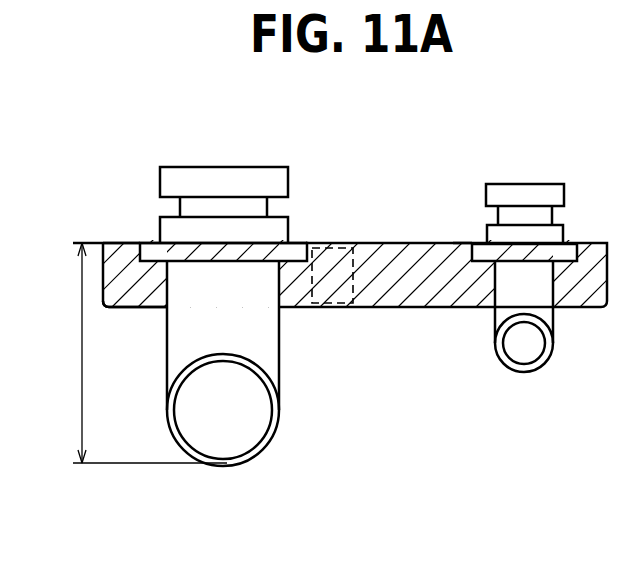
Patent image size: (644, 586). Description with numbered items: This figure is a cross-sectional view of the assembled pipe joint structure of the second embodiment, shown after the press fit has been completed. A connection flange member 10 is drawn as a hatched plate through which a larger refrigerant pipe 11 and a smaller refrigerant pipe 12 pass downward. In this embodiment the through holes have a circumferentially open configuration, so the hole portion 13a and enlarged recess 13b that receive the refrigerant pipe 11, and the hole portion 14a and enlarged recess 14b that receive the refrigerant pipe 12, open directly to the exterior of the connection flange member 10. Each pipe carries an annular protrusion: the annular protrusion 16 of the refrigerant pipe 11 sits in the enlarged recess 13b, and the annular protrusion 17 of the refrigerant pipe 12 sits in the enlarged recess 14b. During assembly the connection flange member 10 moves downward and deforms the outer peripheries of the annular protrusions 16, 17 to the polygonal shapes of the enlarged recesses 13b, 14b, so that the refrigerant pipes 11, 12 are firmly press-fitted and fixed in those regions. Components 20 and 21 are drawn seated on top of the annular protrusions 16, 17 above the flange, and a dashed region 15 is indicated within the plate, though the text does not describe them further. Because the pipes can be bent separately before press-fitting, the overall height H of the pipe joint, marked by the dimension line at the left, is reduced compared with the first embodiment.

The connection flange member 10 is at (390, 243).
The refrigerant pipe 11 is at (279, 326).
The refrigerant pipe 12 is at (556, 329).
The hole portion 13a is at (150, 307).
The enlarged recess 13b is at (138, 252).
The hole portion 14a is at (489, 288).
The enlarged recess 14b is at (457, 258).
The hidden portion 15 is at (358, 243).
The annular protrusion 16 is at (152, 250).
The annular protrusion 17 is at (590, 252).
The first cap 20 is at (222, 208).
The second cap 21 is at (517, 217).
The height of the pipe joint H is at (138, 353).